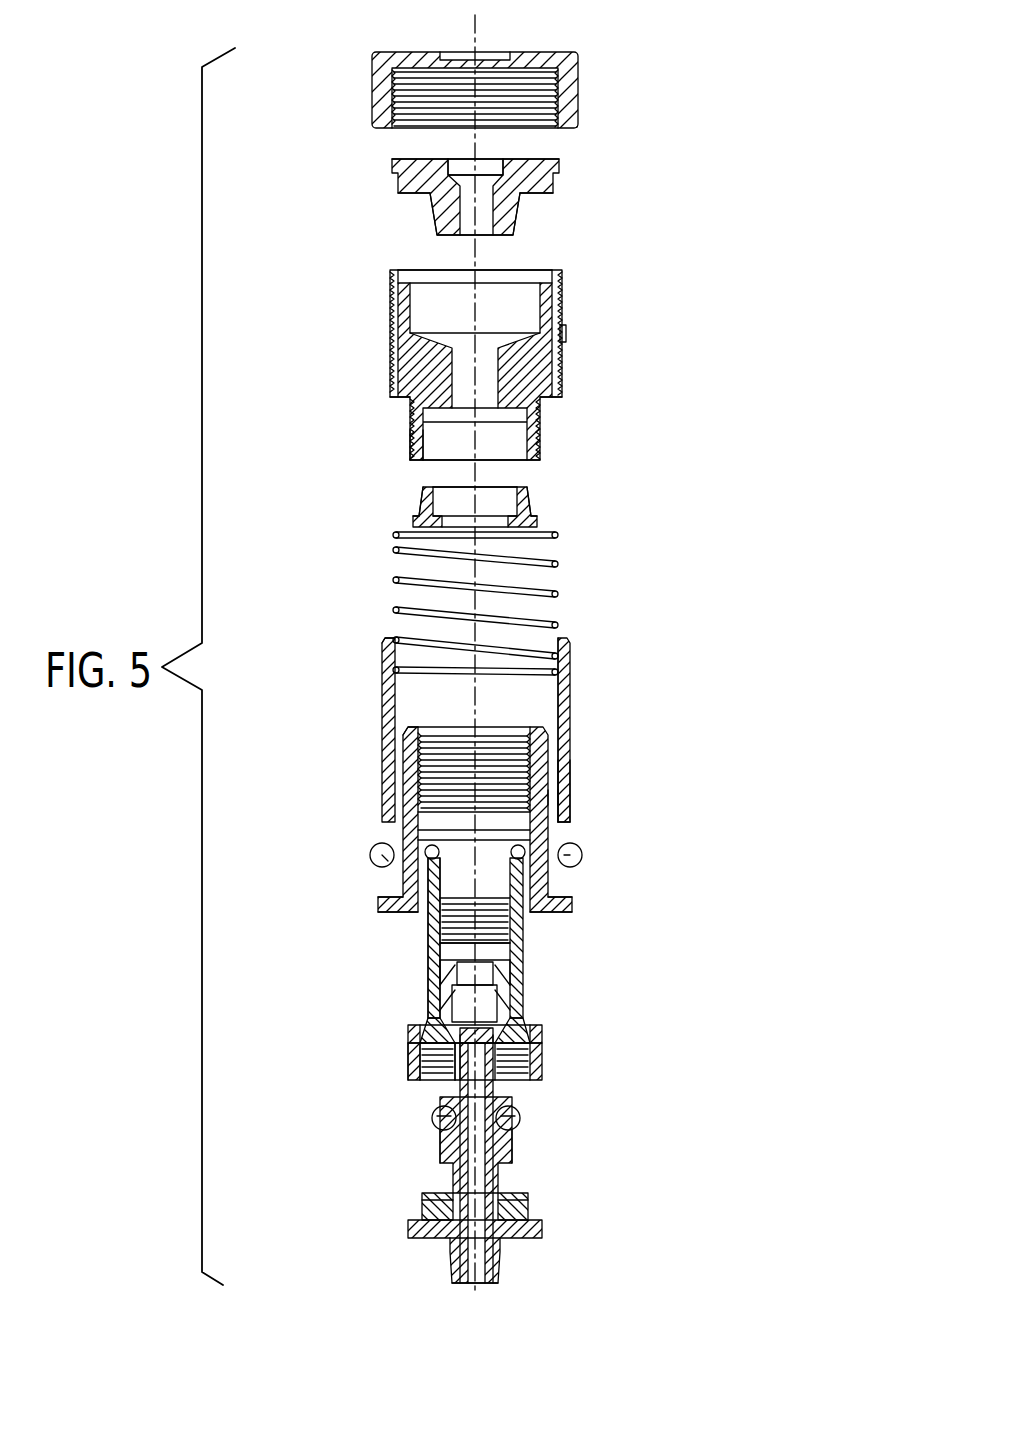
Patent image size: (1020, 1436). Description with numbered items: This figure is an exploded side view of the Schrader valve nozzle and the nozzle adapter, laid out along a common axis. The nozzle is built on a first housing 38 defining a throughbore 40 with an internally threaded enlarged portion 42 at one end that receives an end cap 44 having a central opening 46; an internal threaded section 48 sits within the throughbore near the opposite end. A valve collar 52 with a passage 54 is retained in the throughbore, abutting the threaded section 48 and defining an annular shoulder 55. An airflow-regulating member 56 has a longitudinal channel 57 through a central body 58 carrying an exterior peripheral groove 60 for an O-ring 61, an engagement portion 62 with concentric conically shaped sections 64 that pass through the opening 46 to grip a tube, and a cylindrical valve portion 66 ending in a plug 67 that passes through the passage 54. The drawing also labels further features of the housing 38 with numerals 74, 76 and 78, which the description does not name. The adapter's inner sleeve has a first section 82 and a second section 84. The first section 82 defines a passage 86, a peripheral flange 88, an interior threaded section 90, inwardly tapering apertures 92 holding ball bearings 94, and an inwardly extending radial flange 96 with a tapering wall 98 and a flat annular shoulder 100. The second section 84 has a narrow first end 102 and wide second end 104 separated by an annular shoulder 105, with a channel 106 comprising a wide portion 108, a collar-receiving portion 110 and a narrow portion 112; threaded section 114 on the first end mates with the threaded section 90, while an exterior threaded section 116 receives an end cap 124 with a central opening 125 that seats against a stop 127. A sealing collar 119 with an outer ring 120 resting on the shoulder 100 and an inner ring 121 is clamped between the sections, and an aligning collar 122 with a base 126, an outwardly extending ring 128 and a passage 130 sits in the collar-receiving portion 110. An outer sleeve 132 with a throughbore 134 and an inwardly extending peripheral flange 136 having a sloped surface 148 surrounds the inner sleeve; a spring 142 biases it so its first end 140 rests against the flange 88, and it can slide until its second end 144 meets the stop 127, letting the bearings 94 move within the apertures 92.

The first housing 38 is at (540, 1004).
The throughbore 40 is at (430, 956).
The enlarged portion 42 is at (520, 1083).
The end cap 44 is at (410, 1226).
The central opening 46 is at (452, 1246).
The internal threaded section 48 is at (428, 926).
The valve collar 52 is at (420, 1040).
The passage 54 is at (492, 973).
The annular shoulder 55 is at (545, 1030).
The airflow-regulating member 56 is at (543, 1136).
The longitudinal channel 57 is at (482, 1251).
The central body 58 is at (520, 1155).
The exterior peripheral groove 60 is at (520, 1113).
The O-ring 61 is at (433, 1121).
The engagement portion 62 is at (505, 1180).
The concentric conically shaped sections 64 is at (522, 1201).
The cylindrical valve portion 66 is at (425, 1076).
The plug 67 is at (457, 1086).
The cage band 74 is at (430, 964).
The cage opening 76 is at (433, 973).
The cage threads 78 is at (430, 941).
The first section 82 is at (557, 887).
The second section 84 is at (580, 370).
The passage 86 is at (400, 765).
The peripheral flange 88 is at (383, 891).
The interior threaded section 90 is at (410, 762).
The inwardly tapering apertures 92 is at (428, 858).
The ball bearing 94 is at (381, 853).
The inwardly extending radial flange 96 is at (410, 821).
The inwardly tapering wall 98 is at (527, 827).
The flat annular shoulder 100 is at (435, 795).
The narrow first end 102 is at (421, 459).
The wide second end 104 is at (394, 272).
The annular shoulder 105 is at (545, 399).
The channel 106 is at (497, 436).
The wide portion 108 is at (428, 434).
The collar-receiving portion 110 is at (420, 320).
The narrow portion 112 is at (458, 355).
The threaded section 114 is at (540, 447).
The exterior threaded section 116 is at (560, 292).
The sealing collar 119 is at (401, 500).
The outer ring 120 is at (535, 521).
The inner ring 121 is at (522, 495).
The aligning collar 122 is at (545, 212).
The end cap 124 is at (578, 97).
The central opening 125 is at (488, 57).
The base 126 is at (559, 163).
The stop 127 is at (566, 335).
The outwardly extending ring 128 is at (513, 229).
The passage 130 is at (462, 165).
The outer sleeve 132 is at (578, 723).
The throughbore 134 is at (548, 692).
The inwardly extending peripheral flange 136 is at (556, 790).
The first end 140 is at (568, 823).
The spring 142 is at (555, 597).
The second end 144 is at (393, 640).
The sloped surface 148 is at (568, 804).